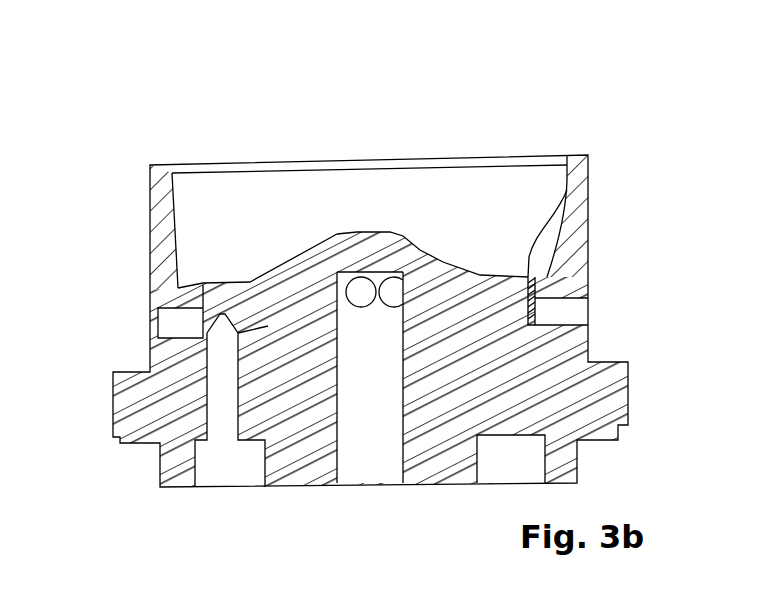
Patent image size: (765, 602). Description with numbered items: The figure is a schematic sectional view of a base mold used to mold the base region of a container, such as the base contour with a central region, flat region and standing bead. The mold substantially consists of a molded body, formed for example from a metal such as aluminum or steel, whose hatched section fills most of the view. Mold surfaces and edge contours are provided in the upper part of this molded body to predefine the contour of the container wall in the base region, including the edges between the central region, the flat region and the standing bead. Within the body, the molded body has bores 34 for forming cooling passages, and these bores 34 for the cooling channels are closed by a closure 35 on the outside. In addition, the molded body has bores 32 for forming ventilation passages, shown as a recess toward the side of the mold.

The bores for forming ventilation passages 32 is at (574, 312).
The bores for forming cooling passages 34 is at (205, 284).
The closure 35 is at (172, 318).